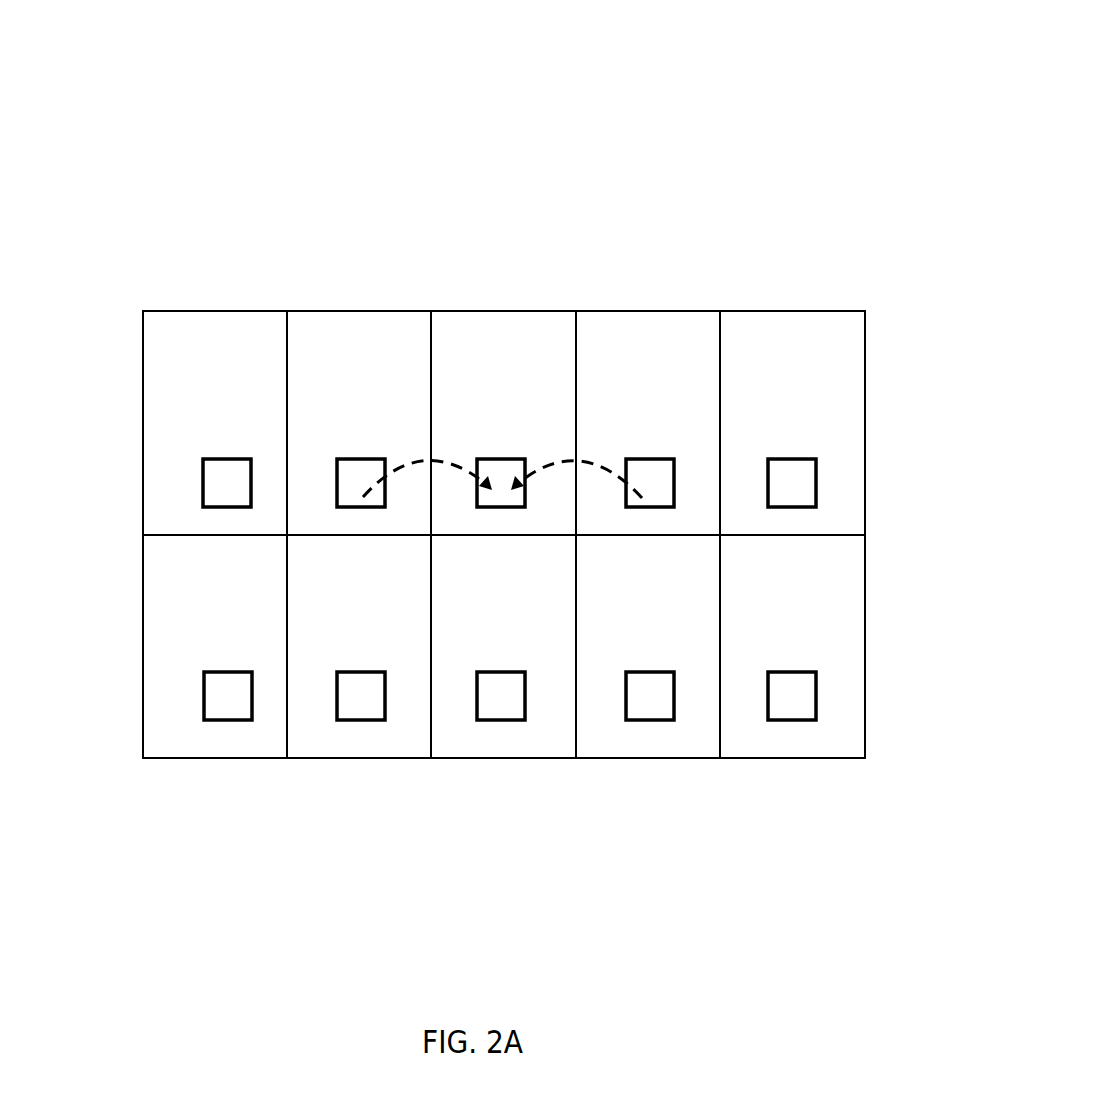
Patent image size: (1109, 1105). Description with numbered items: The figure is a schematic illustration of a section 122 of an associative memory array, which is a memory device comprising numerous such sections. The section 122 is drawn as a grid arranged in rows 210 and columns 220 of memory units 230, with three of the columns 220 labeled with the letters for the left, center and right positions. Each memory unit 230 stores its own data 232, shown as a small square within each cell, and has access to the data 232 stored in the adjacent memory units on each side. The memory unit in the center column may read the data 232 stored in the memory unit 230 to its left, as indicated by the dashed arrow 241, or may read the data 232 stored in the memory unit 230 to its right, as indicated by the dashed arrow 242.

The section 122 is at (678, 98).
The rows 210 is at (865, 647).
The columns 220 is at (810, 311).
The memory unit 230 is at (355, 587).
The data 232 is at (637, 702).
The dashed arrow 241 is at (412, 455).
The dashed arrow 242 is at (550, 468).